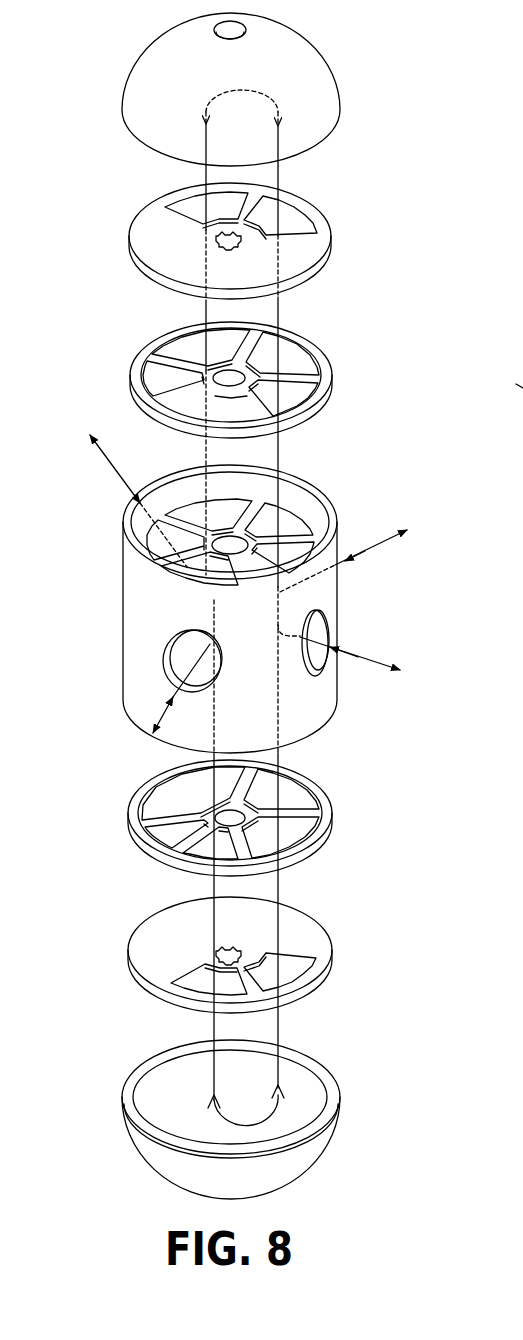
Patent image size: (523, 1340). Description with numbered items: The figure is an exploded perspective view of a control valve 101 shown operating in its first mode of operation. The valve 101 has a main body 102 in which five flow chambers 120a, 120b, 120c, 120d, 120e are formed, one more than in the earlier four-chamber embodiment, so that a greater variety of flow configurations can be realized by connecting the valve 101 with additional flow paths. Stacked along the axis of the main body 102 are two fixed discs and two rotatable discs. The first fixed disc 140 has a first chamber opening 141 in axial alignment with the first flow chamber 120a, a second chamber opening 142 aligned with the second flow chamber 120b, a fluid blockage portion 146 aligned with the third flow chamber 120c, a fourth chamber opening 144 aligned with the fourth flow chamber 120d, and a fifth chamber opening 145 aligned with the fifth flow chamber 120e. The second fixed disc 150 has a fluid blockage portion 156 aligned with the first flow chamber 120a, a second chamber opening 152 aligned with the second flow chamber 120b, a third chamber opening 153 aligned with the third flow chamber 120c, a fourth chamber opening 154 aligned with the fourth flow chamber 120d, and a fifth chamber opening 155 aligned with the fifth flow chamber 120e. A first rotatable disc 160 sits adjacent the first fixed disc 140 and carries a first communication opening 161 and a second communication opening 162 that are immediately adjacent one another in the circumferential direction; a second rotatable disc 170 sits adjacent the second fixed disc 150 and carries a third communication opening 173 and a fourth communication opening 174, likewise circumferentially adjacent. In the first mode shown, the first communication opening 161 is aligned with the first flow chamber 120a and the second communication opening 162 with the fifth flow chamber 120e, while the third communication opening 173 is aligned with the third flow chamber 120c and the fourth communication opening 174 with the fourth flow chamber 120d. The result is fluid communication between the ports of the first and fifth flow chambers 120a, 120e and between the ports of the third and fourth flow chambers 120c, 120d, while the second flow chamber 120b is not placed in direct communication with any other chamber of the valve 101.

The valve 101 is at (368, 80).
The main body 102 is at (327, 678).
The first flow chamber 120a is at (190, 501).
The second flow chamber 120b is at (141, 534).
The third flow chamber 120c is at (210, 572).
The fourth flow chamber 120d is at (298, 549).
The fifth flow chamber 120e is at (291, 526).
The first fixed disc 140 is at (326, 375).
The first chamber opening 141 is at (182, 333).
The second chamber opening 142 is at (136, 388).
The fourth chamber opening 144 is at (298, 388).
The fifth chamber opening 145 is at (292, 336).
The fluid blockage portion 146 is at (222, 410).
The second fixed disc 150 is at (328, 822).
The second chamber opening 152 is at (137, 824).
The third chamber opening 153 is at (168, 862).
The fourth chamber opening 154 is at (300, 830).
The fifth chamber opening 155 is at (284, 787).
The fluid blockage portion 156 is at (201, 787).
The first rotatable disc 160 is at (131, 243).
The first communication opening 161 is at (178, 210).
The second communication opening 162 is at (313, 233).
The second rotatable disc 170 is at (304, 932).
The third communication opening 173 is at (192, 985).
The fourth communication opening 174 is at (294, 965).